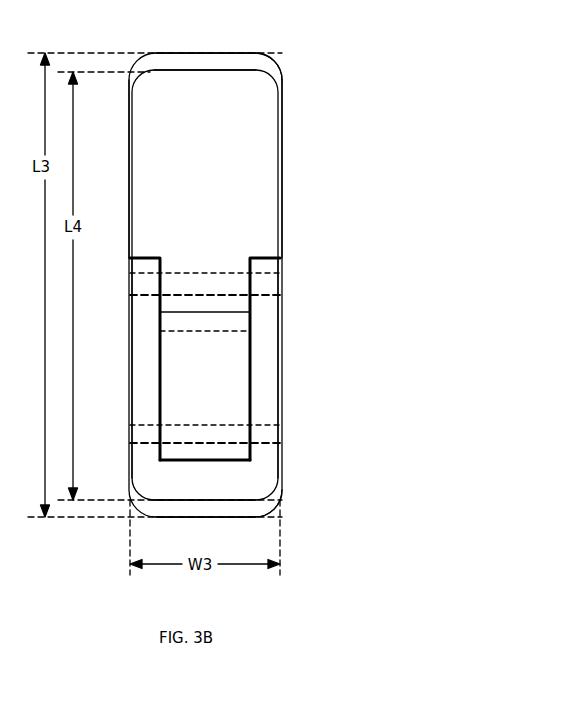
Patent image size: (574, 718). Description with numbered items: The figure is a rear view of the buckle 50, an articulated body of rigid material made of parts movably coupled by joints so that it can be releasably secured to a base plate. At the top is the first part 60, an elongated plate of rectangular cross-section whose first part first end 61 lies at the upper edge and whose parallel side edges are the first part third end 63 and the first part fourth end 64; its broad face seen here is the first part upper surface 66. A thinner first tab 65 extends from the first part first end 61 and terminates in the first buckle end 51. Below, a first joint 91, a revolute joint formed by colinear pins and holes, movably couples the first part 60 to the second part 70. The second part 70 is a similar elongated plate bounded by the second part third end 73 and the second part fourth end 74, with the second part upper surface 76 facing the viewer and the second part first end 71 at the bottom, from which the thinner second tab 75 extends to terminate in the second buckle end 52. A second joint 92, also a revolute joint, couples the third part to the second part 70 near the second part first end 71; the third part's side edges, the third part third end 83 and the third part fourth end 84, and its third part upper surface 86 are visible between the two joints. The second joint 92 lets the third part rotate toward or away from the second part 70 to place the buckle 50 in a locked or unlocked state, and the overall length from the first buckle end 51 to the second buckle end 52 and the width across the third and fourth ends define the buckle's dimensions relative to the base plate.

The buckle 50 is at (360, 74).
The first buckle end 51 is at (177, 42).
The second buckle end 52 is at (233, 529).
The first part 60 is at (283, 106).
The first part first end 61 is at (217, 52).
The first part third end 63 is at (118, 138).
The first part fourth end 64 is at (294, 174).
The first tab 65 is at (268, 57).
The first part upper surface 66 is at (193, 184).
The second part 70 is at (130, 418).
The second part first end 71 is at (191, 514).
The second part third end 73 is at (118, 323).
The second part fourth end 74 is at (294, 320).
The second tab 75 is at (240, 517).
The second part upper surface 76 is at (193, 489).
The third part third end 83 is at (147, 361).
The third part fourth end 84 is at (263, 358).
The third part upper surface 86 is at (193, 386).
The first joint 91 is at (294, 290).
The second joint 92 is at (294, 436).